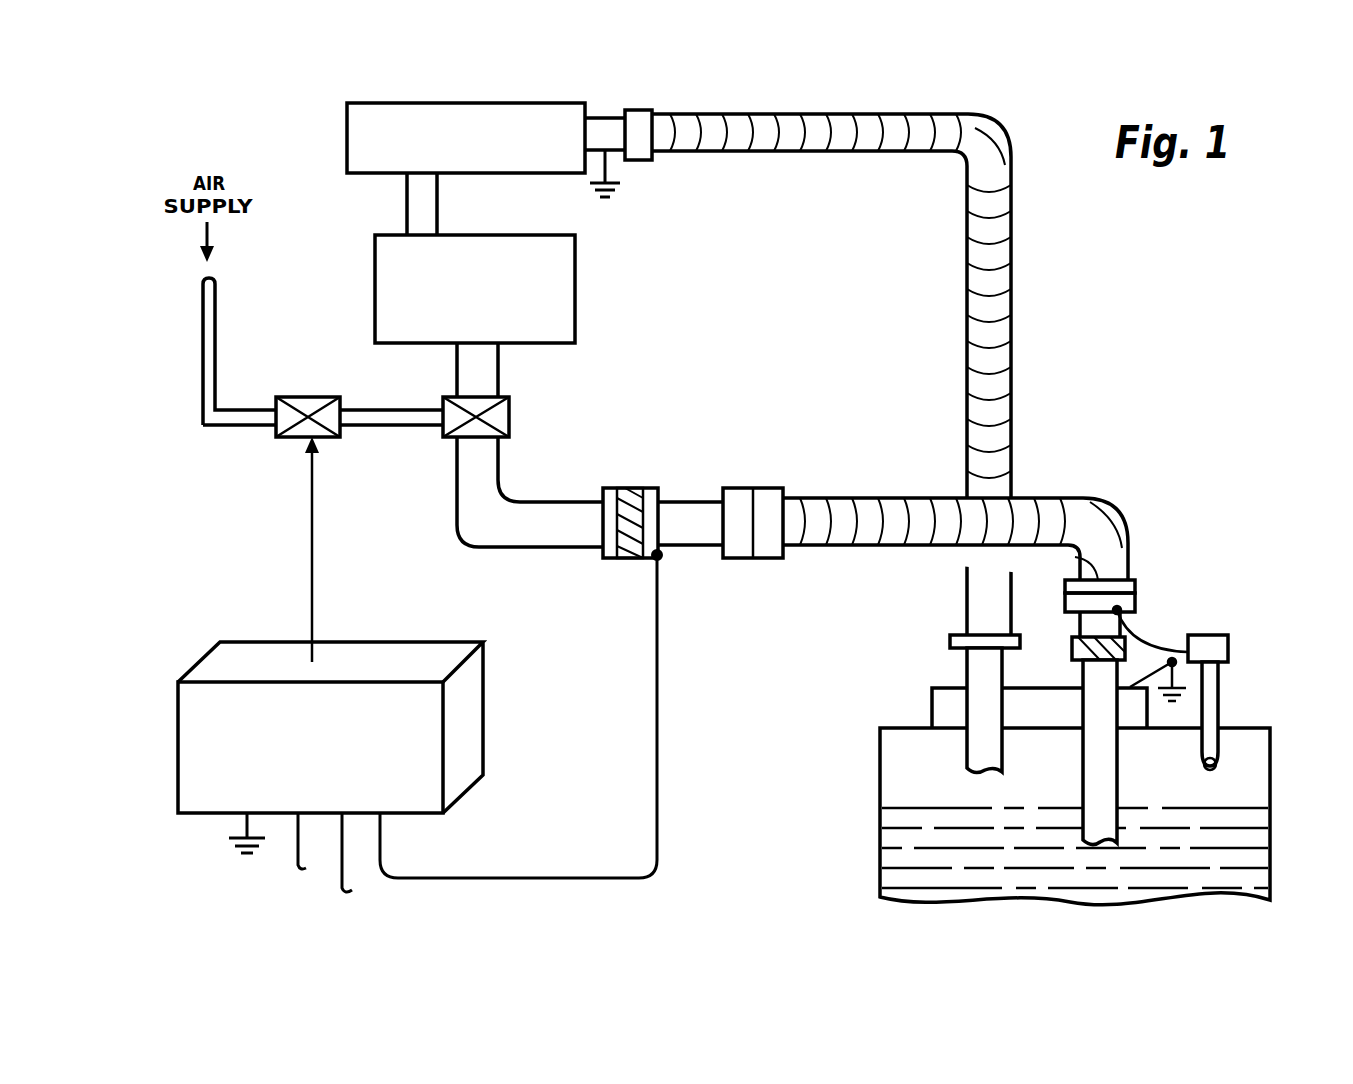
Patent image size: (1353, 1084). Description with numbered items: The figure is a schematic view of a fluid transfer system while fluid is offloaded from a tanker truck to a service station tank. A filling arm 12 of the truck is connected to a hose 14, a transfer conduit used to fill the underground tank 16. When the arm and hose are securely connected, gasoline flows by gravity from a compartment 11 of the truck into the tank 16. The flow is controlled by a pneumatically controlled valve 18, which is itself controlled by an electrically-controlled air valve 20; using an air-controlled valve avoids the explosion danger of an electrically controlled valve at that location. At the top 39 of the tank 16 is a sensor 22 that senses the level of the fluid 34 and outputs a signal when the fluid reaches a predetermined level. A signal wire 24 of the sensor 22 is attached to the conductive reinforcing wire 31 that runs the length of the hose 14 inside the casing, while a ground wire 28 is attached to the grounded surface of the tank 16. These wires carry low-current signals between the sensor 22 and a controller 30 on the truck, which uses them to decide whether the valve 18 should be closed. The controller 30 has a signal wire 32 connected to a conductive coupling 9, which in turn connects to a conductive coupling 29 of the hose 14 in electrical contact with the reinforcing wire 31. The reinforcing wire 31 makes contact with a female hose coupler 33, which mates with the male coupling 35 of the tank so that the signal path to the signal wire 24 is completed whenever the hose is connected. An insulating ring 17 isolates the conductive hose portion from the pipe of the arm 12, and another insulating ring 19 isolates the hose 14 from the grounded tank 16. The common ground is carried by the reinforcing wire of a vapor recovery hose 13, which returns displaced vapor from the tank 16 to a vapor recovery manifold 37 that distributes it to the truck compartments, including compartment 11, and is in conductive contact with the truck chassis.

The conductive coupling 9 is at (687, 512).
The tanker compartment 11 is at (562, 262).
The filling arm 12 is at (532, 518).
The vapor recovery hose 13 is at (1000, 253).
The hose 14 is at (905, 525).
The underground tank 16 is at (1255, 768).
The insulating ring 17 is at (630, 492).
The pneumatically controlled valve 18 is at (510, 413).
The insulating ring 19 is at (1072, 646).
The electrically-controlled air valve 20 is at (315, 402).
The sensor 22 is at (1228, 646).
The signal wire 24 is at (1168, 629).
The ground wire 28 is at (1140, 678).
The conductive coupling 29 is at (770, 498).
The controller 30 is at (185, 725).
The reinforcing wire 31 is at (955, 522).
The signal wire 32 is at (293, 856).
The hose coupler 33 is at (1125, 582).
The fluid 34 is at (885, 841).
The male coupling 35 is at (1132, 600).
The vapor recovery manifold 37 is at (560, 110).
The top of tank 39 is at (932, 712).